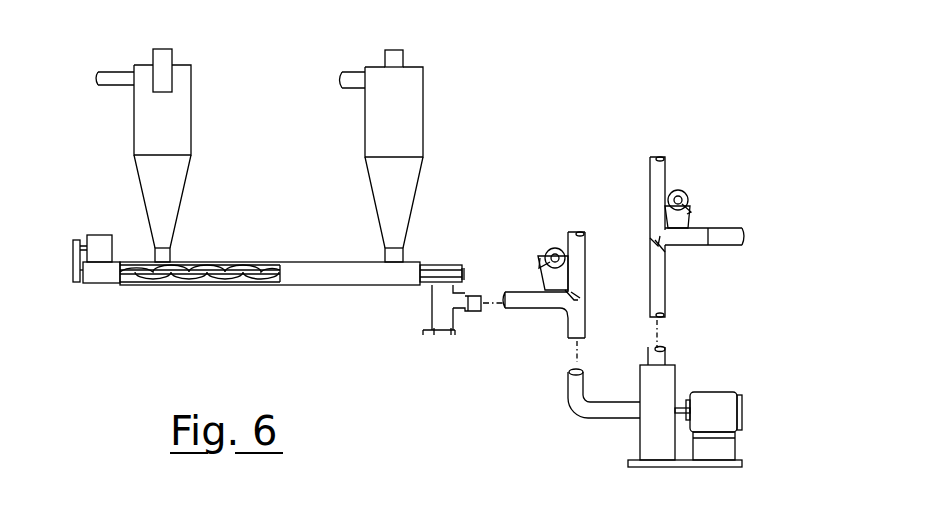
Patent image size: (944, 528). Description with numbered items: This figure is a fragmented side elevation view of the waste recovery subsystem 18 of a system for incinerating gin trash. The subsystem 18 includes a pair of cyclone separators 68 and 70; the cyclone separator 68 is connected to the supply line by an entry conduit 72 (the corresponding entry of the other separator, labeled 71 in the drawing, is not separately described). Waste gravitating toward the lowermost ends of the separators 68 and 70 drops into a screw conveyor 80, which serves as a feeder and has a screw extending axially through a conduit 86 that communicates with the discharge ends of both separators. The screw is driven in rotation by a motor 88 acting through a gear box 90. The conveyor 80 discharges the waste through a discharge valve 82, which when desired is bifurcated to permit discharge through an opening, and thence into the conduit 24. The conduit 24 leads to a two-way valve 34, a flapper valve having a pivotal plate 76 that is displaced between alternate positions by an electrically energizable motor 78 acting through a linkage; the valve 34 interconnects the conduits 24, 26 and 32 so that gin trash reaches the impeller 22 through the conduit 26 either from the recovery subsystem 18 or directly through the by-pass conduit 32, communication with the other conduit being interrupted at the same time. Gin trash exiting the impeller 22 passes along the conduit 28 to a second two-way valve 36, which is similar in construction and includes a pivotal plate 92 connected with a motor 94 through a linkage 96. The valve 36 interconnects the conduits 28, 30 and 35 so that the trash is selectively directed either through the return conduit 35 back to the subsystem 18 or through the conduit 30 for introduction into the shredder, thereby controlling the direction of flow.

The waste recovery subsystem 18 is at (183, 345).
The impeller 22 is at (650, 420).
The conduit 24 is at (474, 312).
The conduit 26 is at (568, 326).
The conduit 28 is at (668, 296).
The conduit 30 is at (726, 228).
The by-pass conduit 32 is at (585, 242).
The two-way valve 34 is at (579, 293).
The return conduit 35 is at (650, 180).
The two-way valve 36 is at (650, 238).
The cyclone separator 68 is at (191, 95).
The cyclone separator 70 is at (421, 91).
The inlet 71 is at (352, 74).
The entry conduit 72 is at (102, 73).
The pivotal plate 76 is at (578, 300).
The motor 78 is at (552, 248).
The screw conveyor 80 is at (330, 285).
The discharge valve 82 is at (440, 333).
The conduit 86 is at (103, 283).
The motor 88 is at (96, 235).
The gear box 90 is at (73, 272).
The pivotal plate 92 is at (668, 250).
The motor 94 is at (680, 190).
The linkage 96 is at (690, 218).